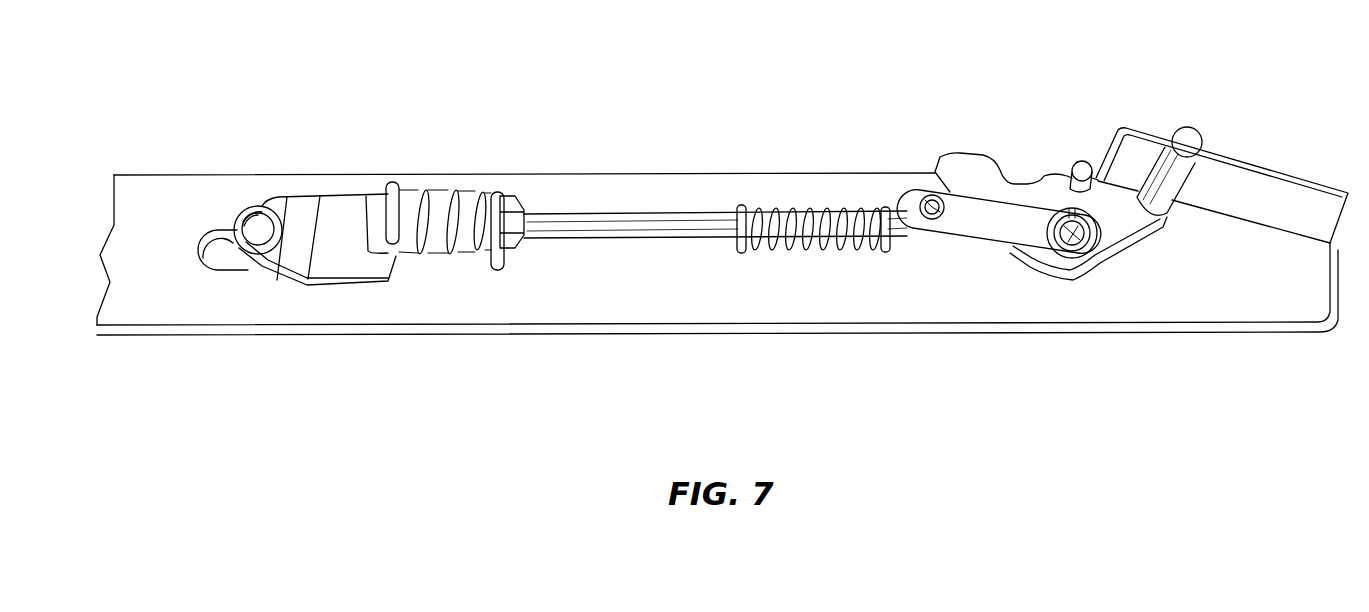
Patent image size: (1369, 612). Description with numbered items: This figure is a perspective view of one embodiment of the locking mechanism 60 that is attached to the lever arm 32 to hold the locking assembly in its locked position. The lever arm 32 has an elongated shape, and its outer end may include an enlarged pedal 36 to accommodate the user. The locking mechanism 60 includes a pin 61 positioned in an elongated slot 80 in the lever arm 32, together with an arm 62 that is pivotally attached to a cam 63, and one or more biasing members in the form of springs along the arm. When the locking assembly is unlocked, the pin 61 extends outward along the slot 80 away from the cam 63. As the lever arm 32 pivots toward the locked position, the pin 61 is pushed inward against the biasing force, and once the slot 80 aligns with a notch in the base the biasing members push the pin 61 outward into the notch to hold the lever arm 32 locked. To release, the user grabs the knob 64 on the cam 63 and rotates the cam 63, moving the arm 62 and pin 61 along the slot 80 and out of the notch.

The lever arm 32 is at (532, 313).
The enlarged pedal 36 is at (1280, 167).
The locking mechanism 60 is at (742, 128).
The pin 61 is at (258, 207).
The arm 62 is at (593, 213).
The cam 63 is at (1088, 243).
The knob 64 is at (1203, 152).
The elongated slot 80 is at (221, 228).